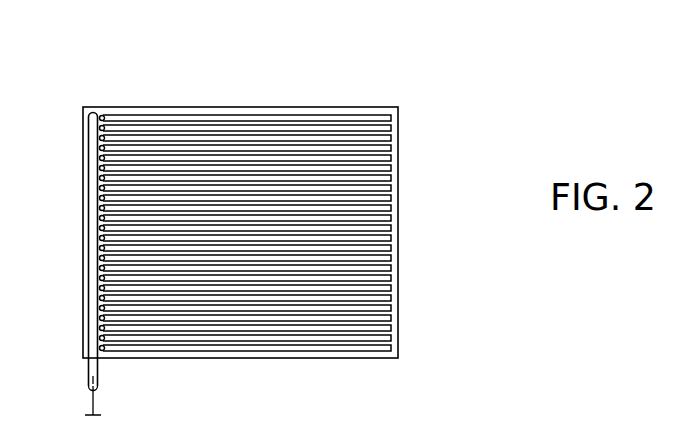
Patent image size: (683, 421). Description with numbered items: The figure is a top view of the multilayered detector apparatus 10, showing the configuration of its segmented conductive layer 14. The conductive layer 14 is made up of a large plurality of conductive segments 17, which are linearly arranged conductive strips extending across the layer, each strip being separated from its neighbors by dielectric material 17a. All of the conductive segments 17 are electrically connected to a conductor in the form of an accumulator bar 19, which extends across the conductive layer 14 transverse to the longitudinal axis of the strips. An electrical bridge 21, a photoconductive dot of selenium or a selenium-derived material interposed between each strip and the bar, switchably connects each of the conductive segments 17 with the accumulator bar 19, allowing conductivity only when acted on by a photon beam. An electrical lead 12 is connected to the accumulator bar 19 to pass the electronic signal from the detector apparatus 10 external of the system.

The multilayered detector apparatus 10 is at (274, 51).
The electrical lead 12 is at (87, 392).
The segmented conductive layer 14 is at (359, 98).
The conductive segments 17 is at (383, 133).
The dielectric material 17a is at (383, 279).
The accumulator bar 19 is at (82, 370).
The electrical bridge 21 is at (93, 108).